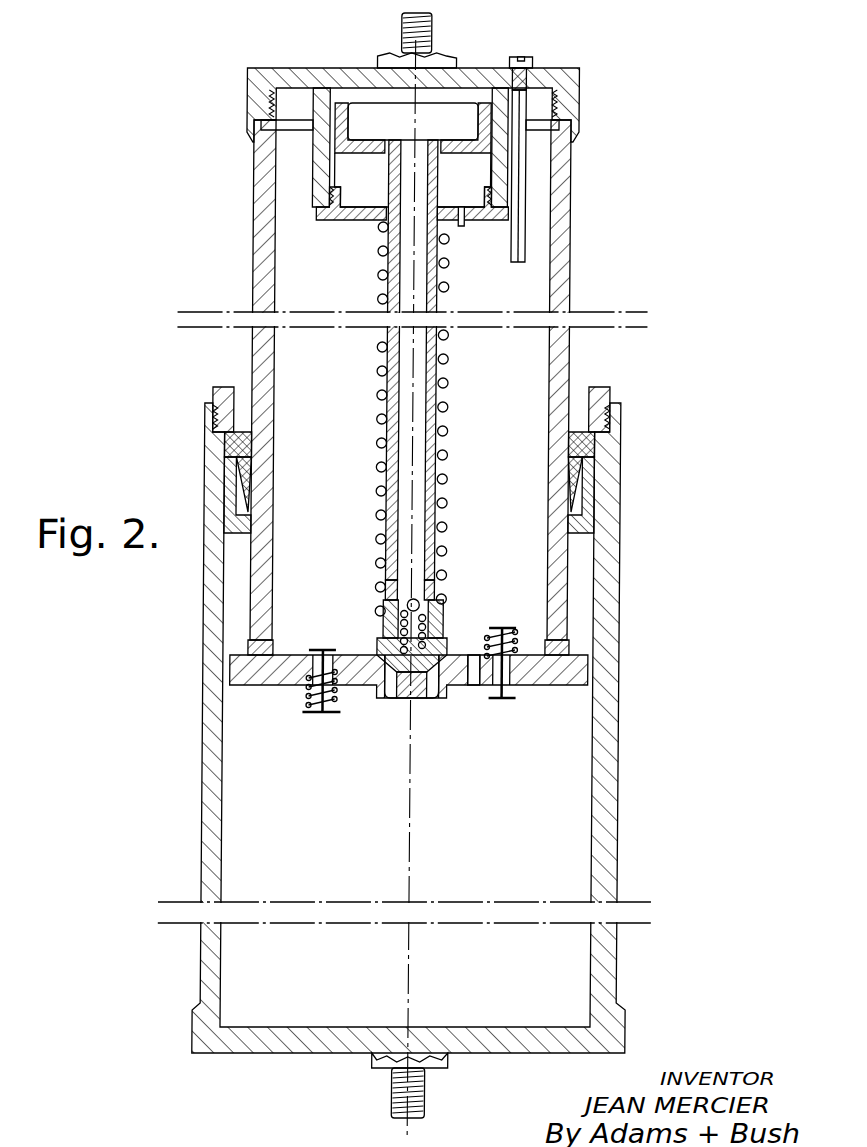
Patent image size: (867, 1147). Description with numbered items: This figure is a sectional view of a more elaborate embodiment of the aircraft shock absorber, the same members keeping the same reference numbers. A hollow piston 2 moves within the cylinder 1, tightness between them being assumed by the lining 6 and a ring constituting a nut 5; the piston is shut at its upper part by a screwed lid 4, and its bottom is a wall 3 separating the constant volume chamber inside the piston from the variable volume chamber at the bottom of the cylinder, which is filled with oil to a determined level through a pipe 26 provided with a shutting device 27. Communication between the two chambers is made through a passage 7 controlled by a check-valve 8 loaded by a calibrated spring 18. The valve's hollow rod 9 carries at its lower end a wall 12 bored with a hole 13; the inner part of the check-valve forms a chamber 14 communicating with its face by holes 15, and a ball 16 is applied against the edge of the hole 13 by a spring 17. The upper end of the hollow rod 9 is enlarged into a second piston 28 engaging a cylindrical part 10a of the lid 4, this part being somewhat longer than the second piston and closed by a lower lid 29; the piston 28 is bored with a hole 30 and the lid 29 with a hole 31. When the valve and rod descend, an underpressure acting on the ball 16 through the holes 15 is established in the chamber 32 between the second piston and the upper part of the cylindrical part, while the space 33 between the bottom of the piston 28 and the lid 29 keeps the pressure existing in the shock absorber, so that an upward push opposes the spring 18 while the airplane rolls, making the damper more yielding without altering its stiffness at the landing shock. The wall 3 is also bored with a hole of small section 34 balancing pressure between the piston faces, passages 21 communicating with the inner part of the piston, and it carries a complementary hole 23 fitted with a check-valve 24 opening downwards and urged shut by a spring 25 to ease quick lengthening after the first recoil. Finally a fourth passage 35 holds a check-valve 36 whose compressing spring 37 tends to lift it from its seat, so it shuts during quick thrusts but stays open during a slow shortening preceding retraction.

The cylinder 1 is at (616, 745).
The hollow piston 2 is at (560, 302).
The wall 3 is at (574, 690).
The screwed lid 4 is at (297, 80).
The nut 5 is at (598, 392).
The lining 6 is at (603, 445).
The passage 7 is at (399, 692).
The check-valve 8 is at (455, 645).
The hollow rod 9 is at (442, 446).
The cylindrical part 10a is at (324, 181).
The wall 12 is at (391, 590).
The hole 13 is at (438, 582).
The chamber 14 is at (387, 615).
The holes 15 is at (430, 698).
The ball 16 is at (423, 601).
The spring 17 is at (450, 625).
The calibrated spring 18 is at (446, 388).
The passages 21 is at (570, 648).
The complementary hole 23 is at (514, 692).
The check-valve 24 is at (505, 700).
The spring 25 is at (513, 634).
The pipe 26 is at (522, 228).
The shutting device 27 is at (522, 56).
The second piston 28 is at (343, 105).
The lower lid 29 is at (332, 216).
The hole 30 is at (378, 153).
The hole 31 is at (466, 224).
The chamber 32 is at (440, 120).
The space 33 is at (466, 141).
The hole of small section 34 is at (479, 683).
The passage 35 is at (316, 681).
The check-valve 36 is at (331, 713).
The compressing spring 37 is at (346, 702).